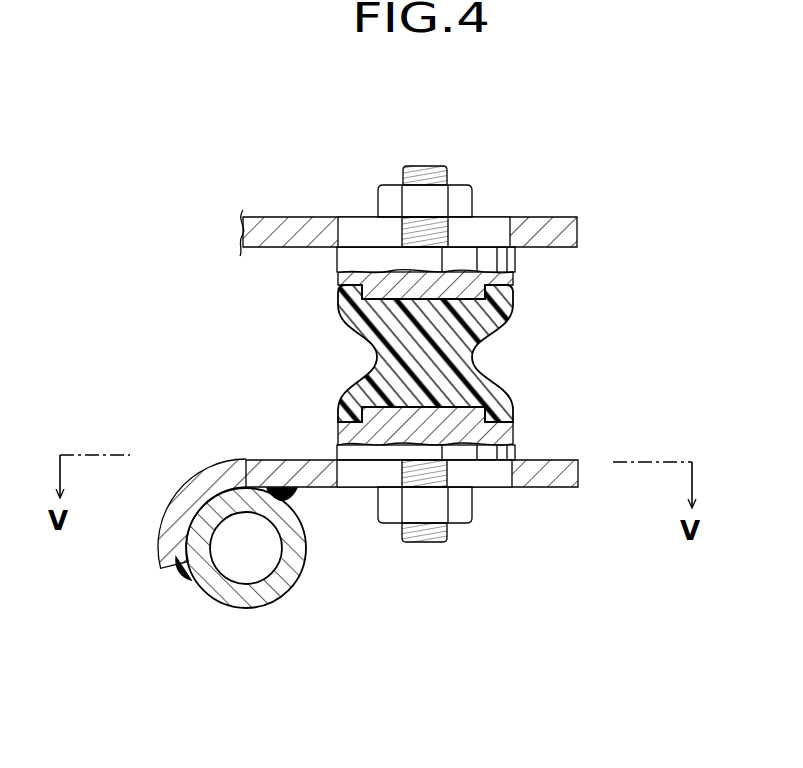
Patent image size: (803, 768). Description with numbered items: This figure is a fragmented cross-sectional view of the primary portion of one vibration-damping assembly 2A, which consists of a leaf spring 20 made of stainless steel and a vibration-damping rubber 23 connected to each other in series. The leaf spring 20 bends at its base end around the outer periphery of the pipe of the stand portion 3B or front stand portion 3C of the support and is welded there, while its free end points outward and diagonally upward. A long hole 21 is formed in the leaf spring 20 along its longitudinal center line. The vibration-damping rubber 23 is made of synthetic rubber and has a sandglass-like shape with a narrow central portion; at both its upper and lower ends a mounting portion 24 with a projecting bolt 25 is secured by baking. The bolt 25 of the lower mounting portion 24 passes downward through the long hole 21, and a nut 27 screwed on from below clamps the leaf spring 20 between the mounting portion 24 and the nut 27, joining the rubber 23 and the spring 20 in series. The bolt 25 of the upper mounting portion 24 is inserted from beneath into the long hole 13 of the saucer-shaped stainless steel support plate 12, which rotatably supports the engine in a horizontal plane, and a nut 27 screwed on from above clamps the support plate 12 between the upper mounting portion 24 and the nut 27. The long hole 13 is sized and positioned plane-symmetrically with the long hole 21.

The vibration-damping assembly 2A is at (283, 343).
The stand portion 3B is at (259, 595).
The front stand portion 3C is at (251, 593).
The support plate 12 is at (550, 232).
The long hole 13 is at (498, 227).
The leaf spring 20 is at (548, 478).
The long hole 21 is at (498, 478).
The vibration-damping rubber 23 is at (463, 352).
The mounting portion 24 is at (477, 282).
The bolt 25 is at (415, 167).
The nut 27 is at (390, 198).